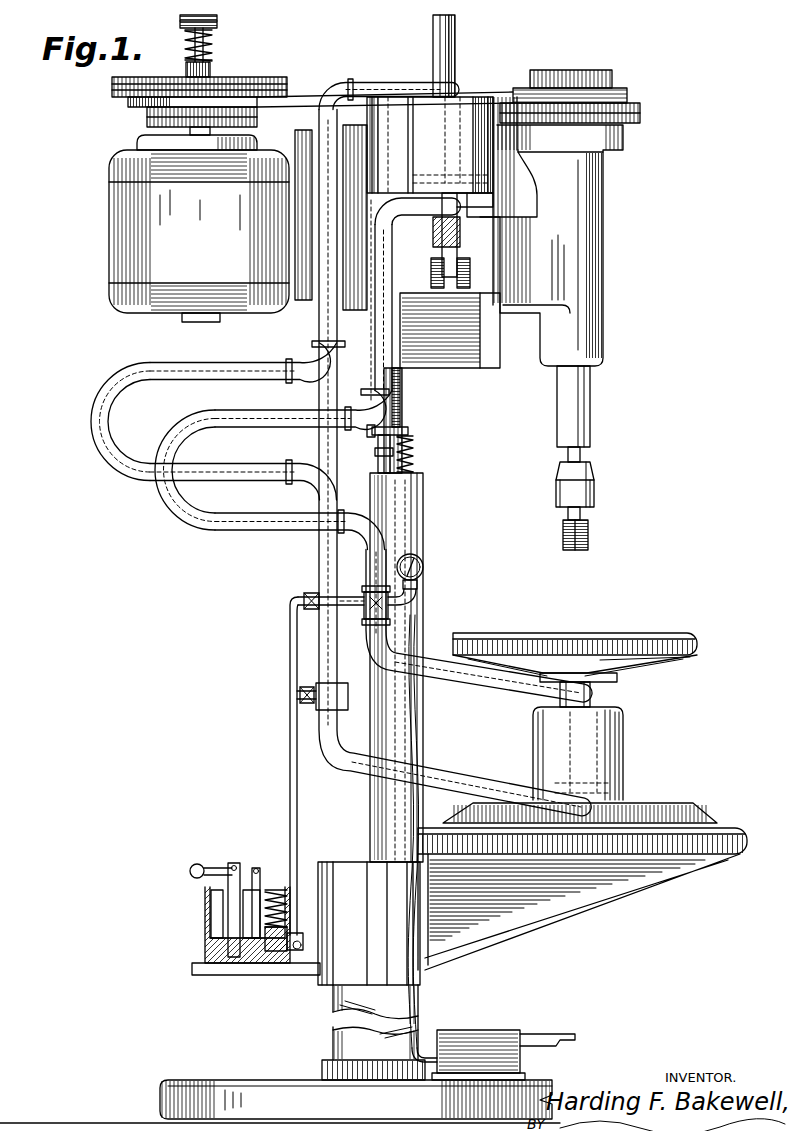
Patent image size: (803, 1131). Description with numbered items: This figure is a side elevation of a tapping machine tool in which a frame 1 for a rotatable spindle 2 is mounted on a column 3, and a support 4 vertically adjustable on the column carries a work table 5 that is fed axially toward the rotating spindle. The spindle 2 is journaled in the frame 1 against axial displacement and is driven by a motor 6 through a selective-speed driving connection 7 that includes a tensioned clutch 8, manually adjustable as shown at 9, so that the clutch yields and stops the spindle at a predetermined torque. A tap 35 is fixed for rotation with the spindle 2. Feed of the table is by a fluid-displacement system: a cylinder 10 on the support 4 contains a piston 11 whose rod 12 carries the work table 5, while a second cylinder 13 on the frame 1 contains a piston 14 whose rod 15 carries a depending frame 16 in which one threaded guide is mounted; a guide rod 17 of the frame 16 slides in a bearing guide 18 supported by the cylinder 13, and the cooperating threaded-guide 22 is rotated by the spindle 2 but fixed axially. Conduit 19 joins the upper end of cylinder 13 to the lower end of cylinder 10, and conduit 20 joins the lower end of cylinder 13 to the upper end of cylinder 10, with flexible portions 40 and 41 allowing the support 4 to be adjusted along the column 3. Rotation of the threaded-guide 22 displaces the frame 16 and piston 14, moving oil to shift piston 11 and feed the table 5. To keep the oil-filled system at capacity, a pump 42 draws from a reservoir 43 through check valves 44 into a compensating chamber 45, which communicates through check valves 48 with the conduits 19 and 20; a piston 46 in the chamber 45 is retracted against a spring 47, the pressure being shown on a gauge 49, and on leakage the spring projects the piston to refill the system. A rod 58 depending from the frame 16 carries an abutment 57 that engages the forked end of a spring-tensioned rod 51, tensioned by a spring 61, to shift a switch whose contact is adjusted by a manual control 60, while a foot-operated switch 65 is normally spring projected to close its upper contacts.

The frame 1 is at (570, 190).
The rotatable spindle 2 is at (582, 462).
The column 3 is at (400, 412).
The support 4 is at (680, 835).
The work table 5 is at (636, 636).
The motor 6 is at (118, 238).
The selective-speed driving connection 7 is at (305, 87).
The tensioned clutch 8 is at (232, 80).
The manual adjustment of clutch 9 is at (212, 19).
The cylinder 10 is at (608, 735).
The piston 11 is at (565, 782).
The piston rod 12 is at (592, 730).
The second cylinder 13 is at (470, 108).
The piston 14 is at (450, 140).
The piston rod 15 is at (438, 266).
The frame 16 is at (487, 355).
The guide rod 17 is at (390, 262).
The bearing guide 18 is at (352, 100).
The conduit 19 is at (322, 290).
The conduit 20 is at (373, 355).
The threaded-guide 22 is at (481, 288).
The tap 35 is at (590, 536).
The flexible portion of conduit 40 is at (128, 462).
The flexible portion of conduit 41 is at (188, 522).
The pump 42 is at (234, 920).
The reservoir 43 is at (211, 901).
The check valves 44 is at (243, 960).
The compensating chamber 45 is at (287, 950).
The piston 46 is at (276, 960).
The spring 47 is at (274, 890).
The check valves 48 is at (317, 598).
The gauge 49 is at (424, 566).
The rod 51 is at (408, 431).
The abutment 57 is at (368, 430).
The rod 58 is at (402, 378).
The manual control 60 is at (375, 453).
The spring 61 is at (413, 456).
The switch 65 is at (500, 1048).